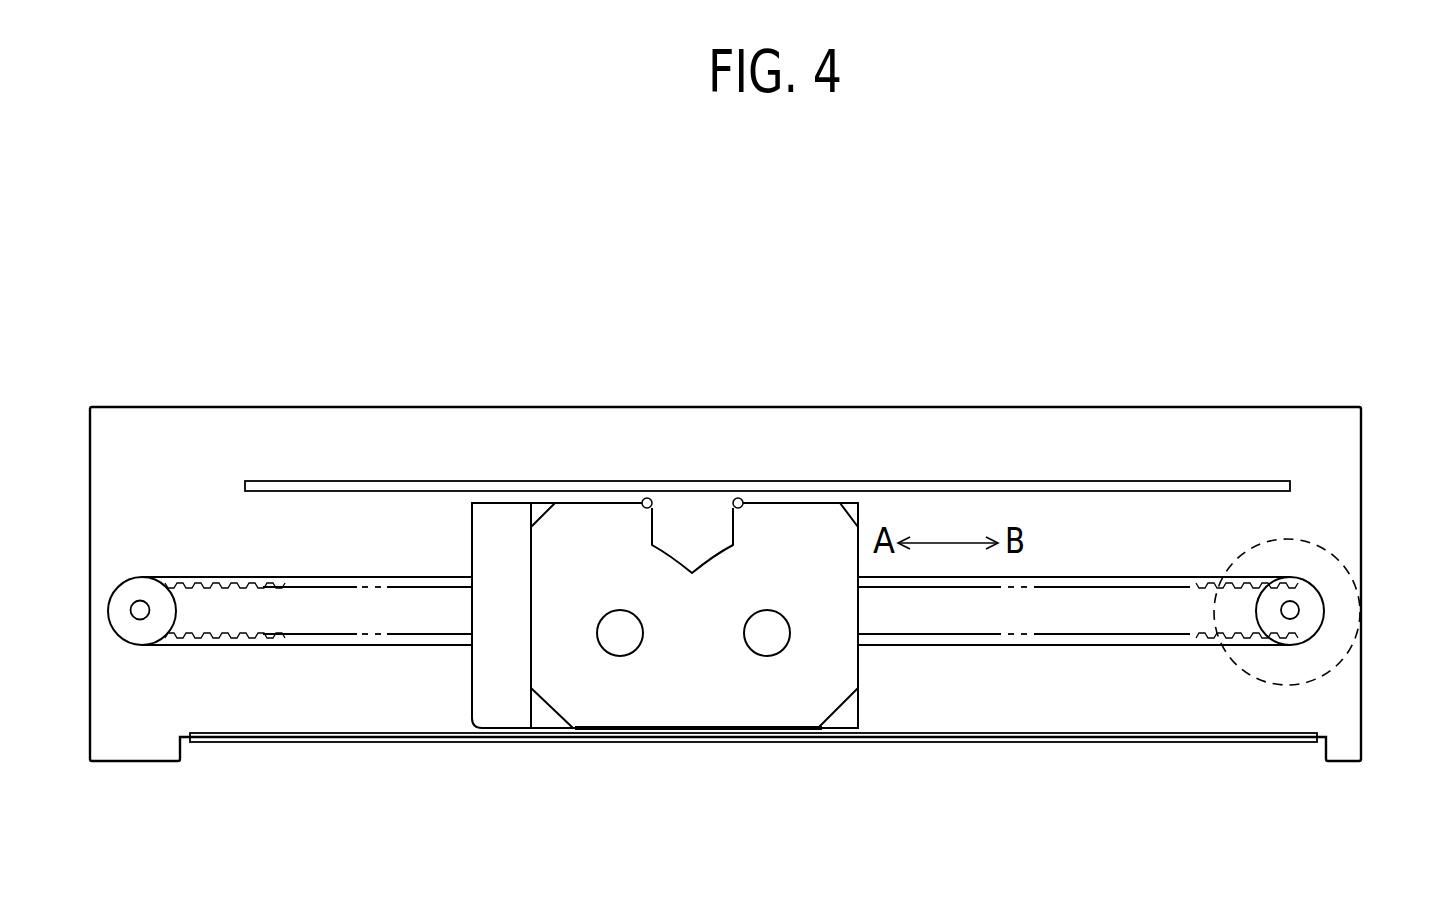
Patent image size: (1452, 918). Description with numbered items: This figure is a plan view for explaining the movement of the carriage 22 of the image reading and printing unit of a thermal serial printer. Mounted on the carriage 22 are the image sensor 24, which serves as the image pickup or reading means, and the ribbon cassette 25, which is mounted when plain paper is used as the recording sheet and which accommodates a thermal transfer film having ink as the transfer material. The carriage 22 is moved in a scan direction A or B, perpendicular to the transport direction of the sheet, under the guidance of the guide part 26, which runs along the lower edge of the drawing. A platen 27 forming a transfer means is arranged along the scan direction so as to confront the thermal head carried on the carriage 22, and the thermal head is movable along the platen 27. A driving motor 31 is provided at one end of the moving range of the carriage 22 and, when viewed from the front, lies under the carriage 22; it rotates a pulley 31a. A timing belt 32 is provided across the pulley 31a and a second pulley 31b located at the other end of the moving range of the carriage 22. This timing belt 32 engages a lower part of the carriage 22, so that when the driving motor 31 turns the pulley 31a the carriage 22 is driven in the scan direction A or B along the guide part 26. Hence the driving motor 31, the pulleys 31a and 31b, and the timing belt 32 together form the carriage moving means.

The carriage 22 is at (847, 720).
The image sensor 24 is at (507, 713).
The ribbon cassette 25 is at (692, 710).
The guide part 26 is at (385, 745).
The platen 27 is at (587, 483).
The driving motor 31 is at (1285, 670).
The pulley 31a is at (1316, 587).
The pulley 31b is at (150, 605).
The timing belt 32 is at (1101, 636).